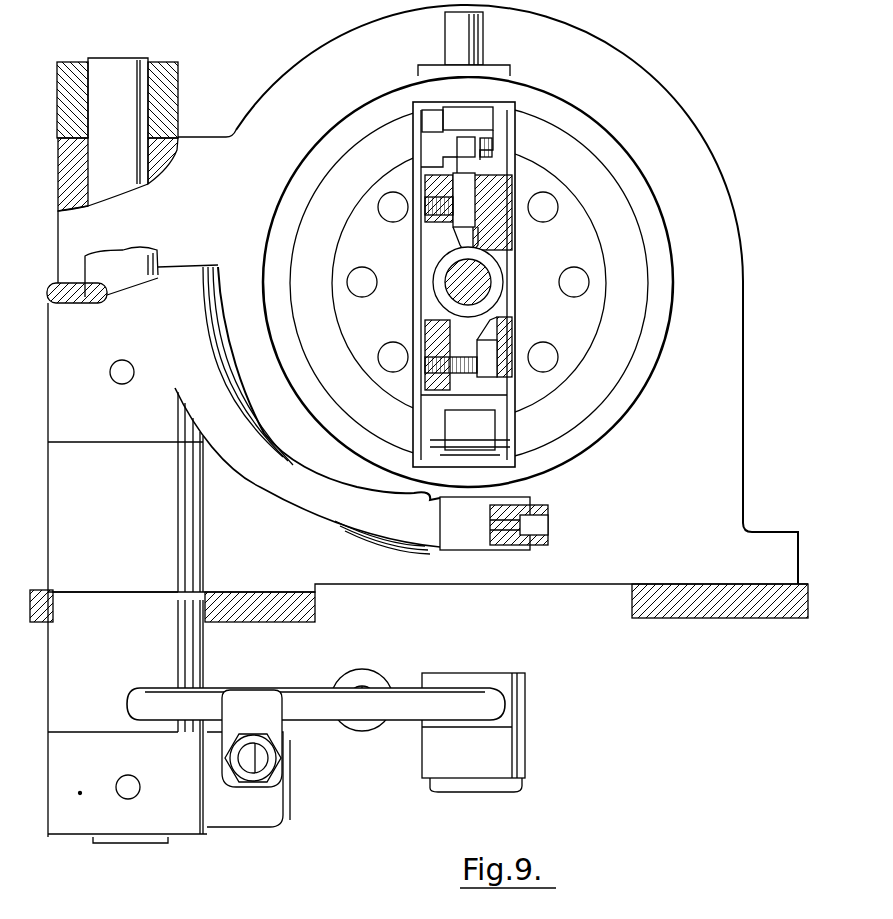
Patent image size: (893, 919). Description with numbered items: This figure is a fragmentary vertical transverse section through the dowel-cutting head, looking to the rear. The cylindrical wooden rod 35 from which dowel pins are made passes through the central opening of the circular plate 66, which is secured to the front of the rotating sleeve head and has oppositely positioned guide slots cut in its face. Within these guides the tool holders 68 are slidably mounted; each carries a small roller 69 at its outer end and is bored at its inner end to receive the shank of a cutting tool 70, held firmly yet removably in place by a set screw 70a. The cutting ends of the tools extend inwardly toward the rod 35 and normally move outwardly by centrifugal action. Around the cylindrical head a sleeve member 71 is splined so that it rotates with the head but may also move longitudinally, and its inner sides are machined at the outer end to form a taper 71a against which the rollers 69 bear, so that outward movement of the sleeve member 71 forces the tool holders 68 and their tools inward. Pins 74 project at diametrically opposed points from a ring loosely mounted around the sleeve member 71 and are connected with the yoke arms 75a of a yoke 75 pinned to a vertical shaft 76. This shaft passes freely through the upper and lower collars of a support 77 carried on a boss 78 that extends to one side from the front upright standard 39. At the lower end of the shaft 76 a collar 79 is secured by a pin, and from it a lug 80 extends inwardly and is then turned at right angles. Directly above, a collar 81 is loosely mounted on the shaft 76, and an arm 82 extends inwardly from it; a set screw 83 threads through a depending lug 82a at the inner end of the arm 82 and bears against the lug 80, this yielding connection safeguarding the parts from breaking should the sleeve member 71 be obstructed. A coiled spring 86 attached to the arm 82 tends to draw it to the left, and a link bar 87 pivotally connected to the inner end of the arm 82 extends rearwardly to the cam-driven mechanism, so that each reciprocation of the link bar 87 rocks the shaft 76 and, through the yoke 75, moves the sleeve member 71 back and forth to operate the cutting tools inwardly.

The cylindrical rod 35 is at (482, 283).
The standard 39 is at (653, 93).
The circular plate 66 is at (587, 248).
The tool holder 68 is at (505, 172).
The roller 69 is at (473, 112).
The cutting tool 70 is at (465, 202).
The set screw 70a is at (440, 207).
The sleeve member 71 is at (648, 202).
The taper 71a is at (628, 320).
The pin 74 is at (485, 42).
The yoke 75 is at (63, 343).
The yoke arm 75a is at (310, 497).
The vertical shaft 76 is at (157, 262).
The support 77 is at (177, 82).
The boss 78 is at (205, 153).
The collar 79 is at (83, 822).
The lug 80 is at (250, 818).
The collar 81 is at (188, 653).
The arm 82 is at (303, 698).
The depending lug 82a is at (233, 727).
The set screw 83 is at (247, 757).
The coiled spring 86 is at (360, 733).
The link bar 87 is at (520, 752).